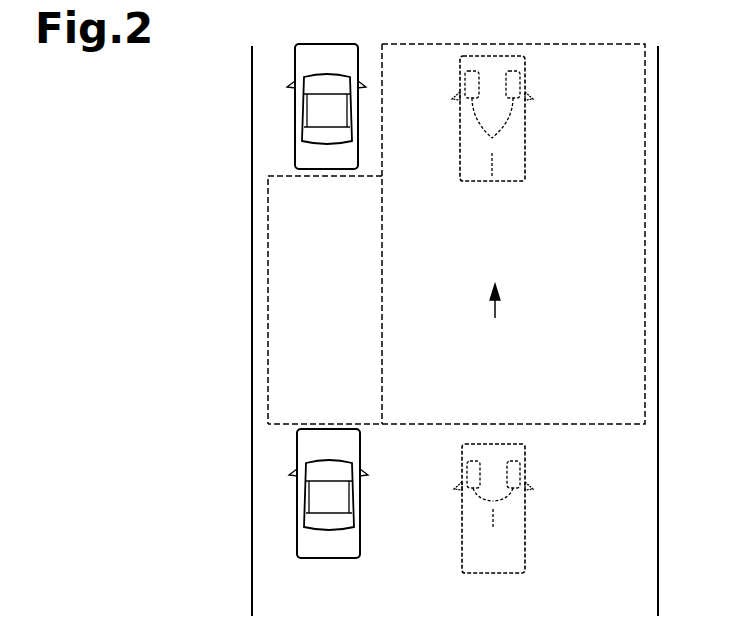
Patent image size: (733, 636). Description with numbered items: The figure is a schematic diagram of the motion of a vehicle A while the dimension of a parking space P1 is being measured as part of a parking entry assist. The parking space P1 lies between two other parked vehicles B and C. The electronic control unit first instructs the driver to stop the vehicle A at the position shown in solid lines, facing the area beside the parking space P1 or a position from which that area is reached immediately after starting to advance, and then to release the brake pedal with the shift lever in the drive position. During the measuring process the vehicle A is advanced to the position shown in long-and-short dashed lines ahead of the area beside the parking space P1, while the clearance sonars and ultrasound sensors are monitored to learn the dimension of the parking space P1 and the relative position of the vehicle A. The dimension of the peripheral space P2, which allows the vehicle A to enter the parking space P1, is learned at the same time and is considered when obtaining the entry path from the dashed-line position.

The vehicle A is at (497, 182).
The other vehicle B is at (293, 50).
The other vehicle C is at (296, 442).
The parking space P1 is at (382, 367).
The peripheral space P2 is at (612, 424).